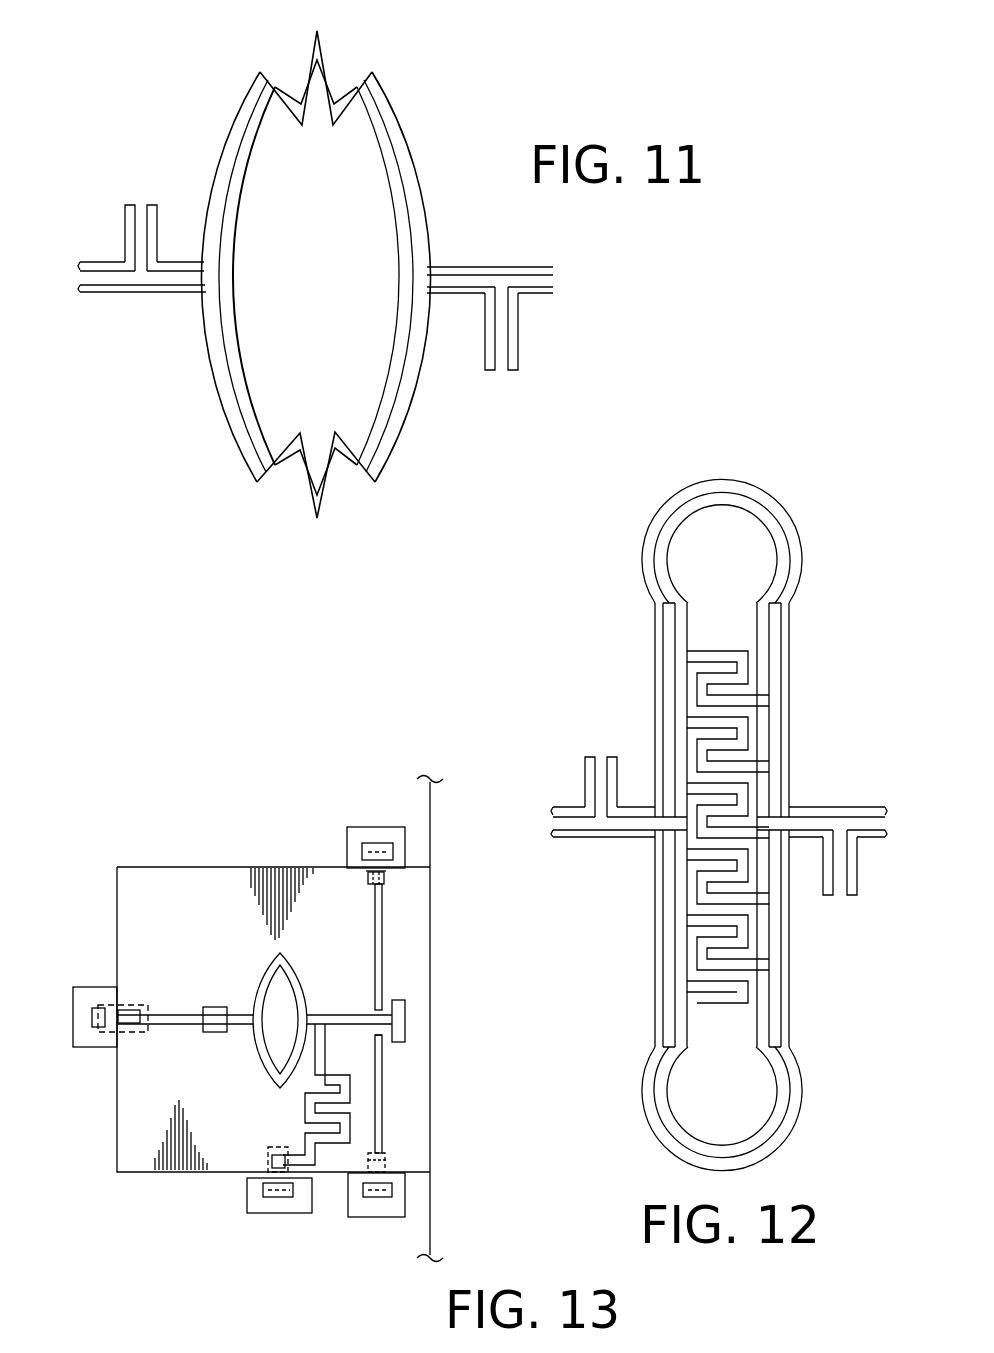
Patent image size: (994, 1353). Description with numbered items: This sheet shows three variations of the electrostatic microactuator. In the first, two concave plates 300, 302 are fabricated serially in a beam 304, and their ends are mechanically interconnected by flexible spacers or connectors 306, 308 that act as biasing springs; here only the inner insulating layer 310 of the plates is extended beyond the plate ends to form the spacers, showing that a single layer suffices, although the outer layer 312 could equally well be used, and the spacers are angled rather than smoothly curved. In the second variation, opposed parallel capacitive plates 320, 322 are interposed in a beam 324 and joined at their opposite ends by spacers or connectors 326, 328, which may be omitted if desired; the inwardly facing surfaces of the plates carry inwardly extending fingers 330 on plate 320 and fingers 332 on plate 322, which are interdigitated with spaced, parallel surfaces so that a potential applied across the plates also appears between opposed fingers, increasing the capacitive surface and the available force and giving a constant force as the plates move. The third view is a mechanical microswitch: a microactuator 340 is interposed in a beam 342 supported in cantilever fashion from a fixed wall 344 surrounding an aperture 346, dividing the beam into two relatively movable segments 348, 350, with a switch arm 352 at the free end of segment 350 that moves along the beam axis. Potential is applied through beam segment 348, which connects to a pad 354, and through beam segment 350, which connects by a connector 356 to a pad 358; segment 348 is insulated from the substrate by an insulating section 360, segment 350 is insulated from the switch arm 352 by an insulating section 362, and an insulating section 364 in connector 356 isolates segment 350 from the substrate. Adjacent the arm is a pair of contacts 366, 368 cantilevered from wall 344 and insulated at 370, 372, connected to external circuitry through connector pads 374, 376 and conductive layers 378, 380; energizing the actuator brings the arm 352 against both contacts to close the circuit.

In FIG. 11, the concave plate 300 is at (245, 122).
In FIG. 11, the concave plate 302 is at (395, 145).
In FIG. 11, the beam 304 is at (172, 282).
In FIG. 11, the flexible spacer 306 is at (334, 49).
In FIG. 11, the flexible spacer 308 is at (348, 516).
In FIG. 11, the inner insulating layer 310 is at (245, 175).
In FIG. 11, the outer layer 312 is at (215, 178).
In FIG. 12, the capacitive plate 320 is at (668, 668).
In FIG. 12, the capacitive plate 322 is at (772, 695).
In FIG. 12, the beam 324 is at (612, 820).
In FIG. 12, the spacer 326 is at (812, 526).
In FIG. 12, the spacer 328 is at (818, 1084).
In FIG. 12, the fingers 330 is at (716, 652).
In FIG. 12, the fingers 332 is at (780, 712).
In FIG. 13, the microactuator 340 is at (248, 958).
In FIG. 13, the beam 342 is at (184, 1030).
In FIG. 13, the wall 344 is at (117, 900).
In FIG. 13, the aperture 346 is at (135, 1138).
In FIG. 13, the beam segment 348 is at (193, 1012).
In FIG. 13, the beam segment 350 is at (328, 1013).
In FIG. 13, the switch arm 352 is at (407, 1005).
In FIG. 13, the pad 354 is at (88, 1012).
In FIG. 13, the connector 356 is at (383, 1062).
In FIG. 13, the pad 358 is at (287, 1197).
In FIG. 13, the insulating section 360 is at (128, 1035).
In FIG. 13, the insulating section 362 is at (384, 1043).
In FIG. 13, the insulating section 364 is at (262, 1163).
In FIG. 13, the contact 366 is at (380, 977).
In FIG. 13, the contact 368 is at (345, 1072).
In FIG. 13, the insulation 370 is at (386, 873).
In FIG. 13, the insulation 372 is at (388, 1168).
In FIG. 13, the connector pad 374 is at (375, 843).
In FIG. 13, the connector pad 376 is at (382, 1197).
In FIG. 13, the conductive layer 378 is at (368, 873).
In FIG. 13, the conductive layer 380 is at (390, 1156).